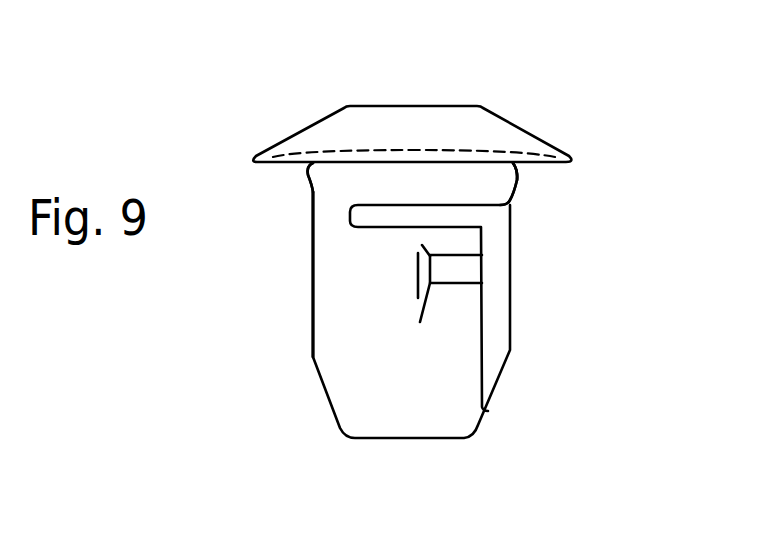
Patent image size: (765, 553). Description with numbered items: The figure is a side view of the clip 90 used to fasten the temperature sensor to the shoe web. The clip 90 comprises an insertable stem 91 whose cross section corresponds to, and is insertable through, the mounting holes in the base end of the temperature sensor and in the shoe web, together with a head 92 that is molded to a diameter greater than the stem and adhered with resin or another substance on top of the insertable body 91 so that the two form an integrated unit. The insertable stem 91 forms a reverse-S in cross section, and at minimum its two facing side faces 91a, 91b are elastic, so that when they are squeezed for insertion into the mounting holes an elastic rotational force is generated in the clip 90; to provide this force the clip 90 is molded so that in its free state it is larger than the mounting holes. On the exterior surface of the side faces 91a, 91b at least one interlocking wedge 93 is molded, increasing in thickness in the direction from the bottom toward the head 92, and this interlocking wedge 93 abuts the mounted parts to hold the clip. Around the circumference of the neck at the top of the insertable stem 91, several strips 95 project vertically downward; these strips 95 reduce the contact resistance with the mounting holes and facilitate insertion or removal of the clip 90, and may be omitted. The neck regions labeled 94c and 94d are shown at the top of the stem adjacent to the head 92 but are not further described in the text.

The clip 90 is at (578, 110).
The insertable stem 91 is at (460, 427).
The side face 91a is at (337, 308).
The side face 91b is at (255, 278).
The head 92 is at (322, 130).
The interlocking wedge 93 is at (463, 270).
The engaging portion 94c is at (510, 198).
The engaging portion 94d is at (310, 191).
The strips 95 is at (517, 178).